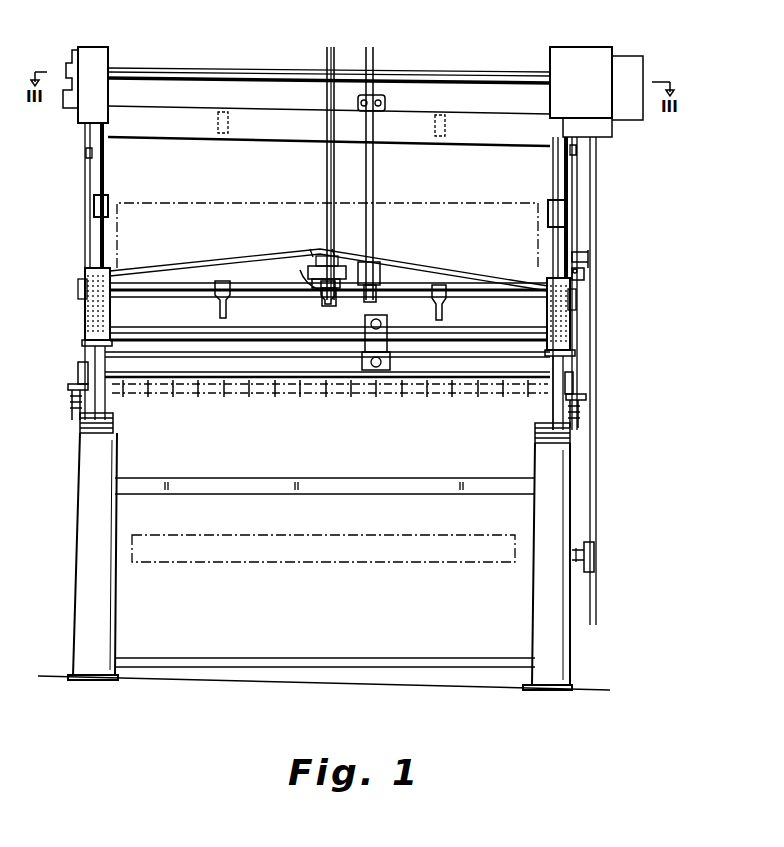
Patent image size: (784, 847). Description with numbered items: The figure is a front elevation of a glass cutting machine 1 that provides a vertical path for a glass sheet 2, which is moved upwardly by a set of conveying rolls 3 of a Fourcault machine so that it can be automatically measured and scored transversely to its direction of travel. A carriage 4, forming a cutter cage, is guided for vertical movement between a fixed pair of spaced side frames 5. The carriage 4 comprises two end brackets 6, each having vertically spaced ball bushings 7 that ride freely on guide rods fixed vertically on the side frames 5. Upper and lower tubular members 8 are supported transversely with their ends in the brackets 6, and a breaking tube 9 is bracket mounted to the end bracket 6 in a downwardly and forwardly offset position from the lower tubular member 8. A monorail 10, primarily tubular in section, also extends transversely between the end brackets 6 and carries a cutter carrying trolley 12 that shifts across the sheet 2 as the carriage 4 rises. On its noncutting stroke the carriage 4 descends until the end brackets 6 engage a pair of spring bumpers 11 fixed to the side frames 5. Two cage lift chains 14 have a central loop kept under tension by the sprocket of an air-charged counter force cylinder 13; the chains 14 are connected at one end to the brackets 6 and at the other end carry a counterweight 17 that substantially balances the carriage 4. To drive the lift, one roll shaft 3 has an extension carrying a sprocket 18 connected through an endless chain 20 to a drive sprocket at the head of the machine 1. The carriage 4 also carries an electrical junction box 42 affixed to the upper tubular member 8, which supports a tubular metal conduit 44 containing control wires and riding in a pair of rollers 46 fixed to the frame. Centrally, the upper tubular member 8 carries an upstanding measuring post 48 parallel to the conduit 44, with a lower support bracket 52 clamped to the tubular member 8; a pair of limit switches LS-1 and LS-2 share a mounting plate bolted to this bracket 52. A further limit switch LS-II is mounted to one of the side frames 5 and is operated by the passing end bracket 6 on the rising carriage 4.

The glass cutting machine 1 is at (106, 35).
The glass sheet 2 is at (186, 200).
The conveying rolls 3 is at (455, 540).
The carriage 4 is at (503, 270).
The side frames 5 is at (86, 155).
The end brackets 6 is at (78, 372).
The ball bushings 7 is at (85, 357).
The upper and lower tubular members 8 is at (212, 292).
The breaking tube 9 is at (220, 397).
The monorail 10 is at (280, 342).
The spring bumpers 11 is at (68, 390).
The cutter carrying trolley 12 is at (388, 326).
The counter force cylinder 13 is at (110, 308).
The cage lift chains 14 is at (106, 155).
The counterweight 17 is at (113, 428).
The sprocket 18 is at (594, 548).
The endless chain 20 is at (597, 218).
The electrical junction box 42 is at (376, 266).
The tubular metal conduit 44 is at (375, 160).
The rollers 46 is at (386, 100).
The measuring post 48 is at (326, 160).
The lower support bracket 52 is at (310, 282).
The limit switch LS-1 is at (317, 264).
The limit switch LS-2 is at (349, 307).
The limit switch LS-II is at (586, 276).